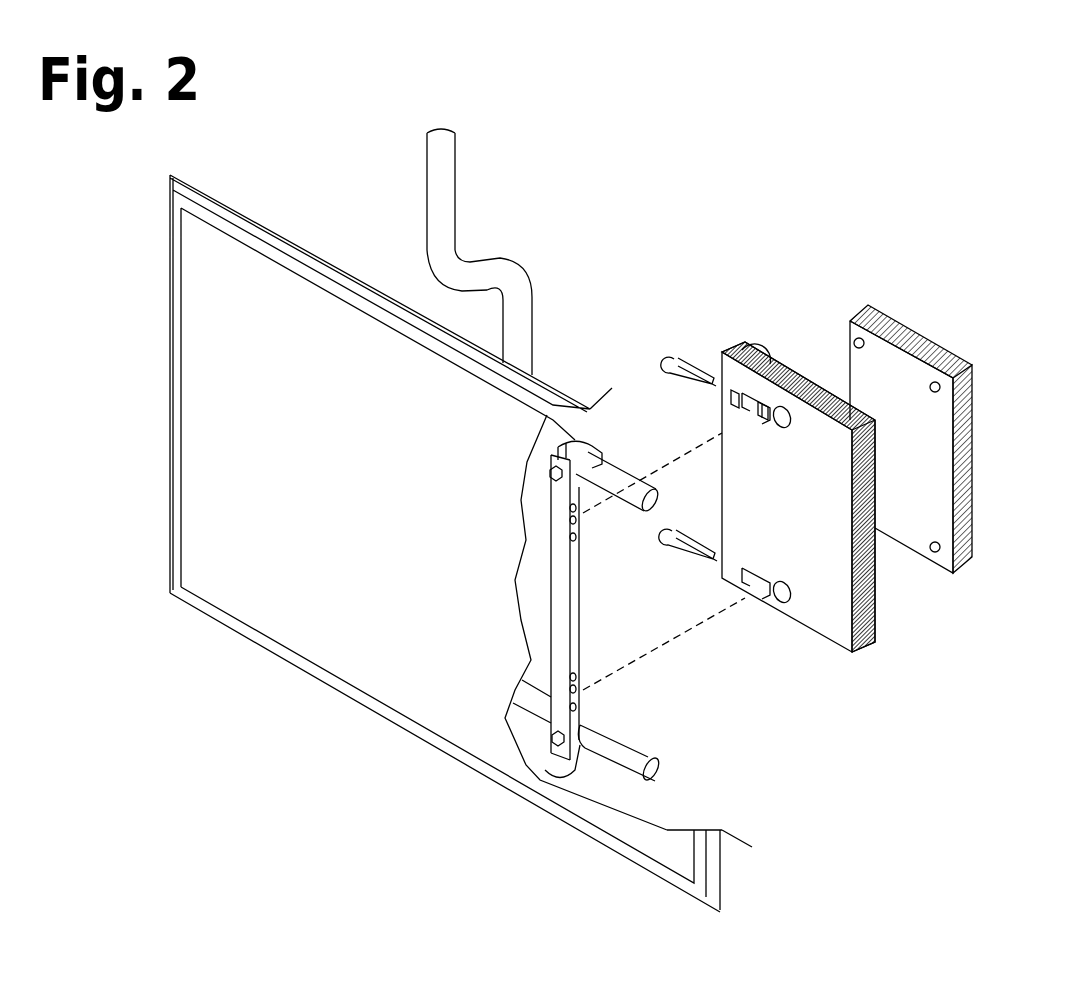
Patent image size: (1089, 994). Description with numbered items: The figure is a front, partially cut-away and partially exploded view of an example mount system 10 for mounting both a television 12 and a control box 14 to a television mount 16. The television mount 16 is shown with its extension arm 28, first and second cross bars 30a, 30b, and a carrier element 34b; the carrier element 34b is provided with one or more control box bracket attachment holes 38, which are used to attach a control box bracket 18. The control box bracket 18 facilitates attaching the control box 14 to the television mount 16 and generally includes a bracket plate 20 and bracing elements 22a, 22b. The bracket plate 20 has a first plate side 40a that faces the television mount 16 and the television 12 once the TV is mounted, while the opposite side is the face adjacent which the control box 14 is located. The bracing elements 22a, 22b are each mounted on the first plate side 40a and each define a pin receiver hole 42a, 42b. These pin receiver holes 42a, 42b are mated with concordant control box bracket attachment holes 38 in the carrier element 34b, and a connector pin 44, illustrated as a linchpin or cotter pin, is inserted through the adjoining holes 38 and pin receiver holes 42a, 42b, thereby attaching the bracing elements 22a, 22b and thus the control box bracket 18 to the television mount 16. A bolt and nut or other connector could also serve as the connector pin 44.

The mount system 10 is at (725, 237).
The television 12 is at (205, 330).
The control box 14 is at (978, 403).
The television mount 16 is at (523, 268).
The control box bracket 18 is at (884, 640).
The bracket plate 20 is at (818, 614).
The bracing element 22a is at (751, 402).
The bracing element 22b is at (750, 582).
The extension arm 28 is at (428, 183).
The first cross bar 30a is at (625, 470).
The second cross bar 30b is at (645, 752).
The carrier element 34b is at (582, 610).
The control box bracket attachment holes 38 is at (577, 518).
The first plate side 40a is at (801, 497).
The pin receiver hole 42a is at (745, 392).
The pin receiver hole 42b is at (766, 400).
The connector pin 44 is at (666, 350).